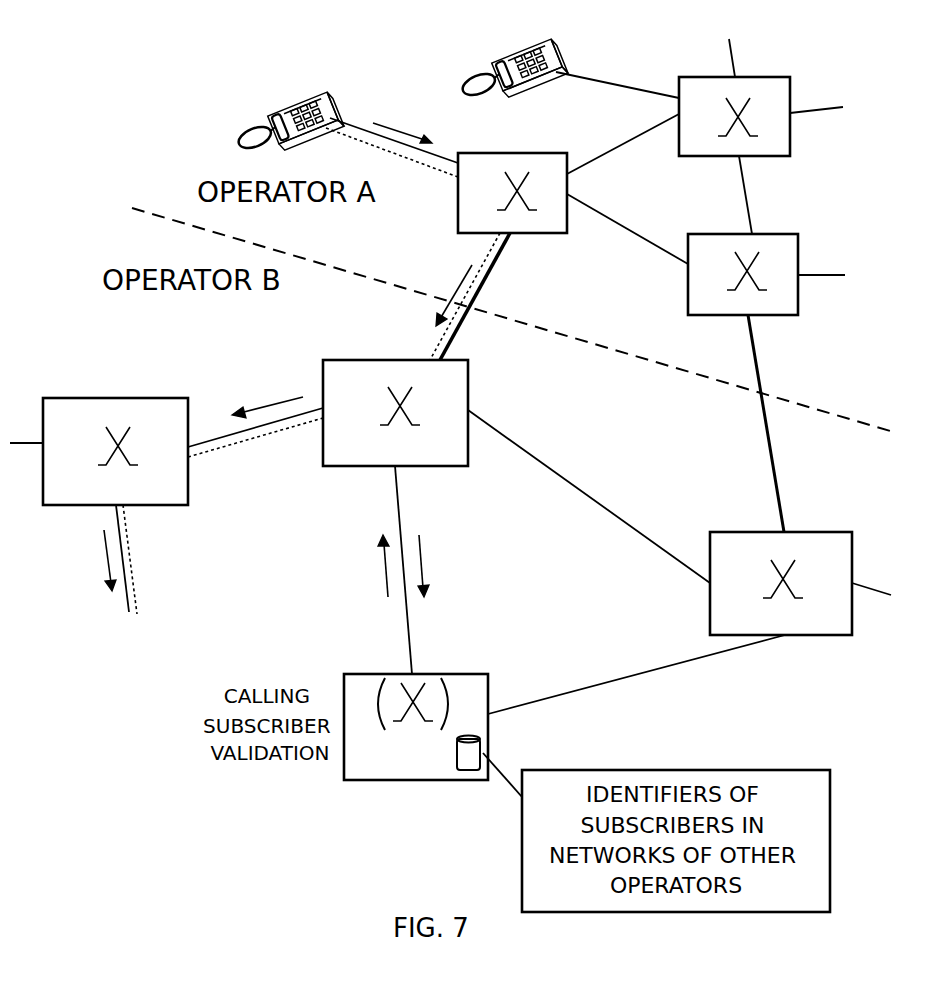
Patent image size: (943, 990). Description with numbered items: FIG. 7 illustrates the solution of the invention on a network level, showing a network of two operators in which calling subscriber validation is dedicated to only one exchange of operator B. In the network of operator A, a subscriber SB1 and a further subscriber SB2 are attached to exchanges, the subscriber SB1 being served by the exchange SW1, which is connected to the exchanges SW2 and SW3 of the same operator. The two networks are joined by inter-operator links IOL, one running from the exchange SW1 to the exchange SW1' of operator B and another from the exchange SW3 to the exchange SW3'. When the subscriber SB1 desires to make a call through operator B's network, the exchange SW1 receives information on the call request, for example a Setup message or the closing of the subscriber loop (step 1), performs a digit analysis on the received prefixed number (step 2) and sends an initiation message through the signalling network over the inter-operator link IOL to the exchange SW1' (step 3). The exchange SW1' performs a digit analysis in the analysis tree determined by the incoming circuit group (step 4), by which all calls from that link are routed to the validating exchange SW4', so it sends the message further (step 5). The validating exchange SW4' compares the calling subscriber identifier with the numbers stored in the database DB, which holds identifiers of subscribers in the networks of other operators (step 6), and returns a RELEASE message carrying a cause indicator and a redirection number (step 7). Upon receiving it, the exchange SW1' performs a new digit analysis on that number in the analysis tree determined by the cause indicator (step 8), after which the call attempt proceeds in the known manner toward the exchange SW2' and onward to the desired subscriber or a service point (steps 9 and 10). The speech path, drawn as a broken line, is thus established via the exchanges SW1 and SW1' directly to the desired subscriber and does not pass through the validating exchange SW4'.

The subscriber SB1 is at (300, 96).
The subscriber SB2 is at (524, 41).
The exchange SW1 is at (512, 175).
The exchange SW2 is at (745, 99).
The exchange SW3 is at (755, 257).
The exchange SW1' is at (328, 393).
The exchange SW2' is at (115, 436).
The exchange SW3' is at (794, 566).
The validating exchange SW4' is at (433, 717).
The inter-operator link IOL is at (497, 267).
The database DB is at (454, 755).
The step of receiving call information 1 is at (402, 119).
The digit analysis step 2 is at (500, 199).
The initiation message sending step 3 is at (464, 296).
The digit analysis step 4 is at (418, 422).
The message forwarding step 5 is at (440, 566).
The validation step 6 is at (400, 724).
The release message step 7 is at (367, 566).
The new digit analysis step 8 is at (276, 438).
The call progression step 9 is at (255, 408).
The call progression step 10 is at (98, 559).